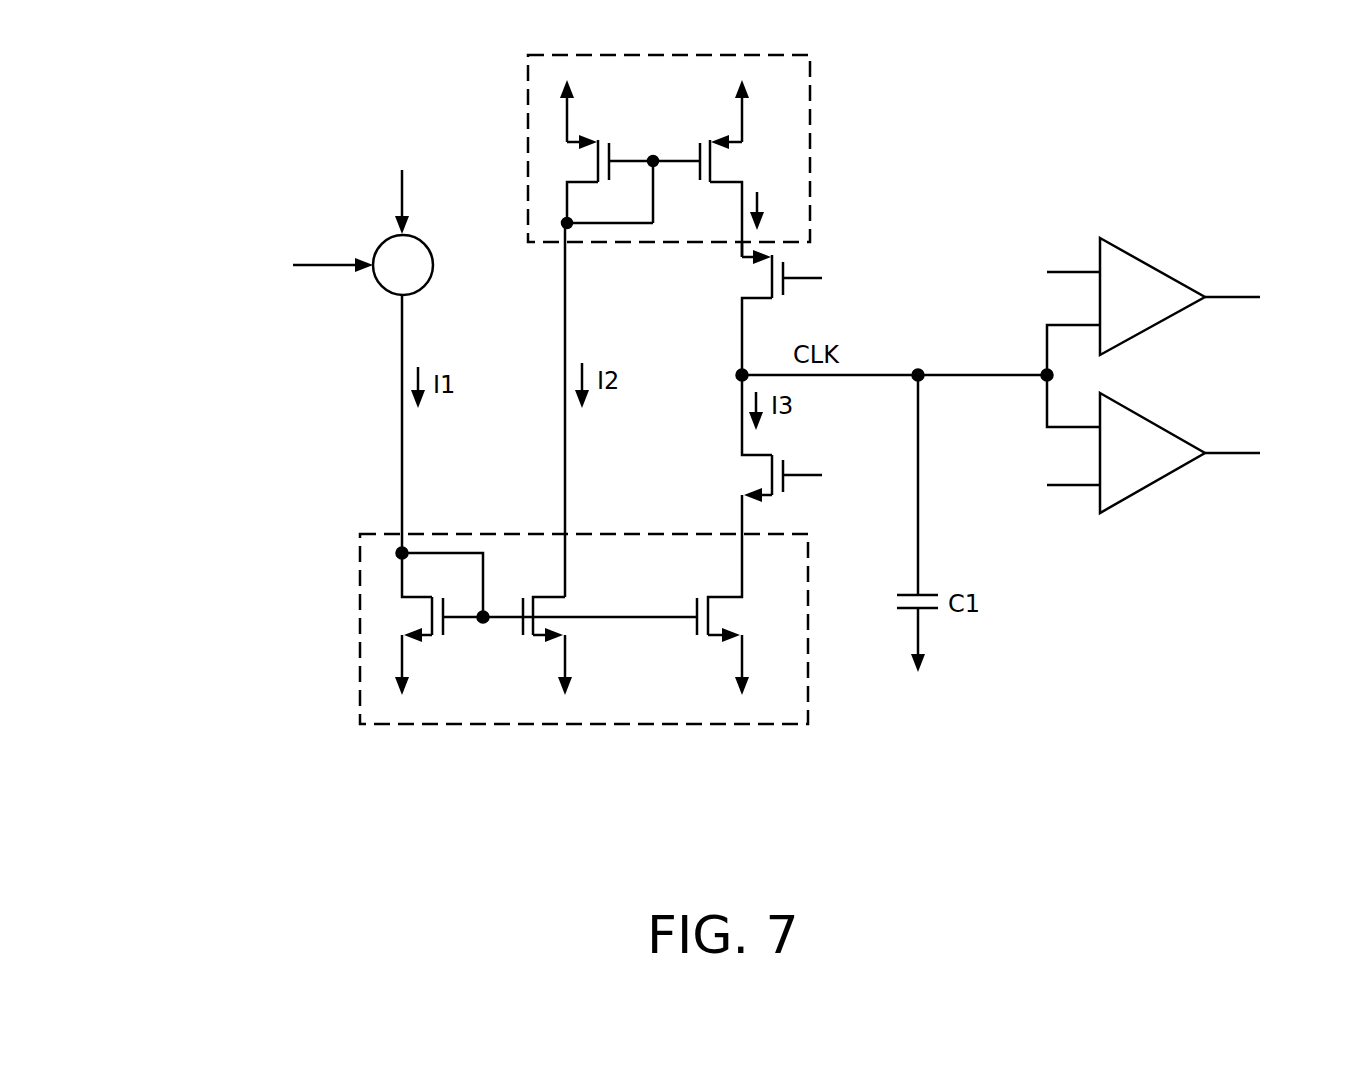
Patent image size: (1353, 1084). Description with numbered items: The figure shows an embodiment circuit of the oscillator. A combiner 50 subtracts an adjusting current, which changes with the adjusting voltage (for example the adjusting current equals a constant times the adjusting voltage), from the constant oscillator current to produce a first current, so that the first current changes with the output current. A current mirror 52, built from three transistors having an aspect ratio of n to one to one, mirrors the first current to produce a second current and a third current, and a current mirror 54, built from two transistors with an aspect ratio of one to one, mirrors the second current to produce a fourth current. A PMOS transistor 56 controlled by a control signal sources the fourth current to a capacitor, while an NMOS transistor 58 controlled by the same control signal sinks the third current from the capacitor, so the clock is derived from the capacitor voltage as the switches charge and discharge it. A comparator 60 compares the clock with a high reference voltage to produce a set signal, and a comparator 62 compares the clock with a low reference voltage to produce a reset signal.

The combiner 50 is at (433, 267).
The current mirror 52 is at (360, 630).
The current mirror 54 is at (812, 152).
The PMOS transistor 56 is at (734, 287).
The NMOS transistor 58 is at (734, 468).
The comparator 60 is at (1150, 268).
The comparator 62 is at (1150, 424).